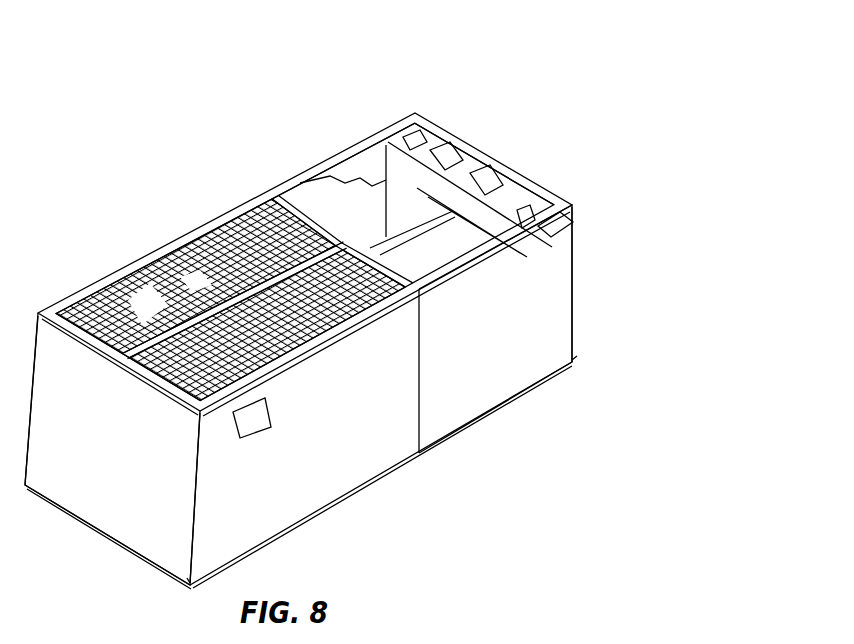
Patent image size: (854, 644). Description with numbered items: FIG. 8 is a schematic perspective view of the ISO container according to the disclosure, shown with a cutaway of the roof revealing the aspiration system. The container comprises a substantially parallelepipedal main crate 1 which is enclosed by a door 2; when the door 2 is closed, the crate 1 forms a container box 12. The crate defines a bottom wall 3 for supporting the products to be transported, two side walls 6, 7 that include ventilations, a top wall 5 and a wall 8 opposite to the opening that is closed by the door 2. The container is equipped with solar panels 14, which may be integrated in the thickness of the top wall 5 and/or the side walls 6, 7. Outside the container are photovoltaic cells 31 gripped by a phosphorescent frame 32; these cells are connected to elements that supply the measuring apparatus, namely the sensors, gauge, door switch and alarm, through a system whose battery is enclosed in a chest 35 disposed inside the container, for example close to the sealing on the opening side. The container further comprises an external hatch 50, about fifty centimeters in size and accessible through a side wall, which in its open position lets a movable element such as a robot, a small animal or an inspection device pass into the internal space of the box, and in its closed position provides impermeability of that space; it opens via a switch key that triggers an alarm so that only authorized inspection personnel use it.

The main crate 1 is at (596, 432).
The door 2 is at (498, 154).
The bottom wall 3 is at (340, 474).
The top wall 5 is at (262, 218).
The side wall 6 is at (495, 329).
The side wall 7 is at (300, 183).
The wall opposite the opening 8 is at (112, 449).
The container box 12 is at (544, 176).
The solar panels 14 is at (152, 273).
The photovoltaic cells 31 is at (186, 288).
The phosphorescent frame 32 is at (147, 342).
The chest 35 is at (549, 228).
The external hatch 50 is at (258, 410).